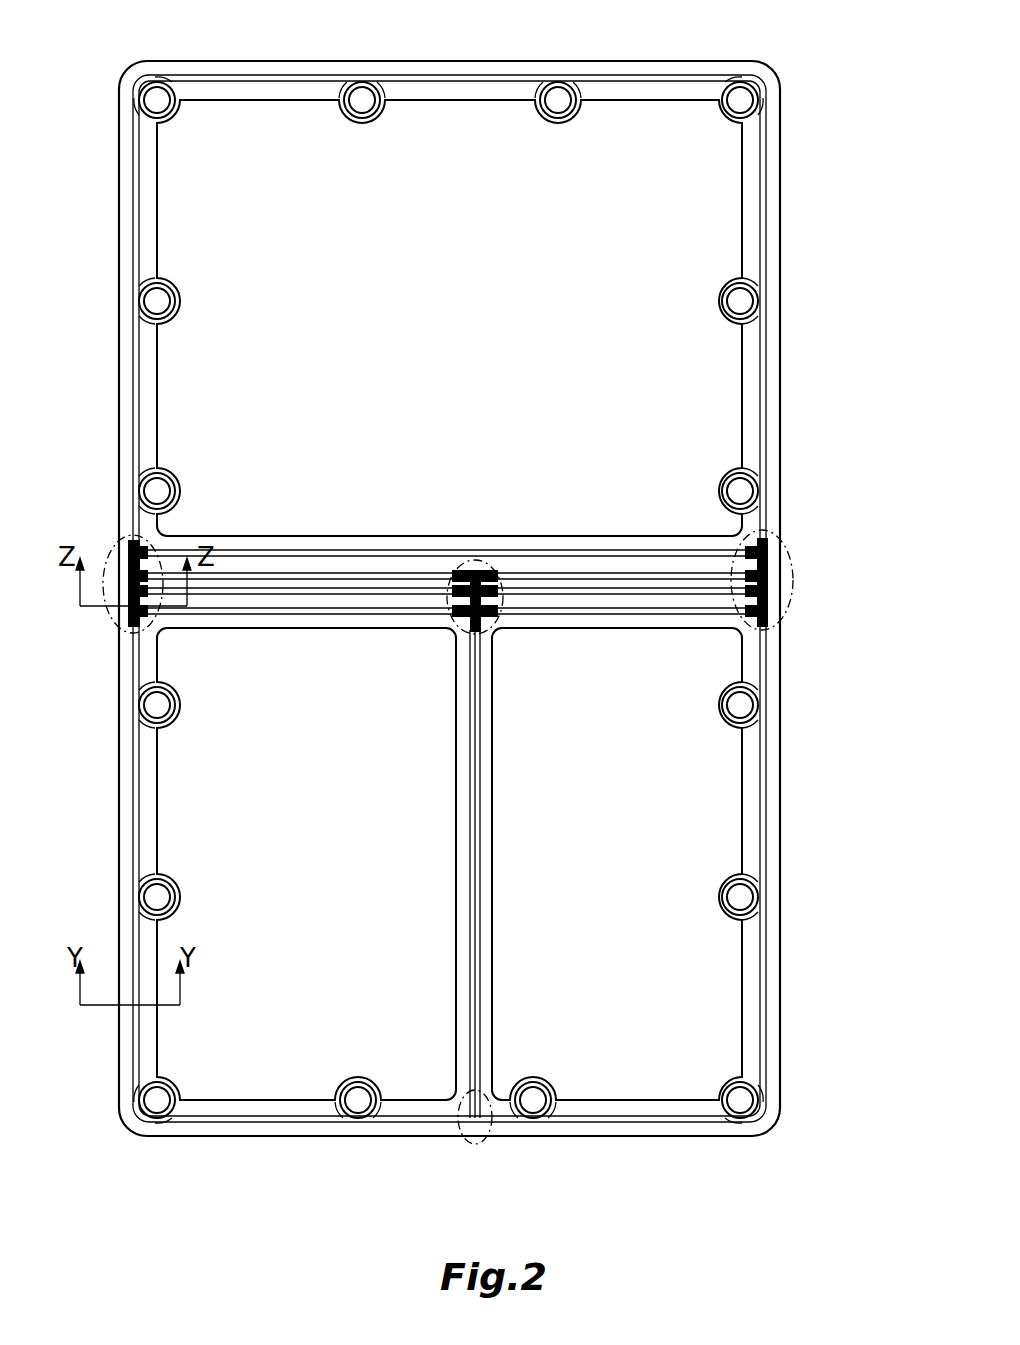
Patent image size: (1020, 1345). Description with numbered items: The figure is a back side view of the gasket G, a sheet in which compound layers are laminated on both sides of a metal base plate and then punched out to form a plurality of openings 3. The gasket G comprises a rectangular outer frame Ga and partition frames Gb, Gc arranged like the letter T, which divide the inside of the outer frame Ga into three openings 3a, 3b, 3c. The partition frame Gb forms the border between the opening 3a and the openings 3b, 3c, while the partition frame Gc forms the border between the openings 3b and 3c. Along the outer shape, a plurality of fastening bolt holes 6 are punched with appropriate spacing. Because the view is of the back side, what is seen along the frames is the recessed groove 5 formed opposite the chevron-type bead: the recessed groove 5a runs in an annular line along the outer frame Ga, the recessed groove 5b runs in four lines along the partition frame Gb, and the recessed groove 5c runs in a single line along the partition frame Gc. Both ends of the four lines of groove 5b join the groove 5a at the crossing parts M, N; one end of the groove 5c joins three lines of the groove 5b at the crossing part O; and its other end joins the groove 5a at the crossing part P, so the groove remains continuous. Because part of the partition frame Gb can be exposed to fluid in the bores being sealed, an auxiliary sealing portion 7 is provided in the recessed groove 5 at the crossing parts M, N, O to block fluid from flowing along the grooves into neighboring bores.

The gasket G is at (603, 58).
The outer frame Ga is at (122, 792).
The partition frame Gb is at (455, 538).
The partition frame Gc is at (490, 920).
The openings 3 is at (513, 646).
The opening 3a is at (715, 412).
The opening 3b is at (712, 822).
The opening 3c is at (258, 1075).
The recessed groove 5 is at (449, 567).
The recessed groove 5a is at (285, 80).
The recessed groove 5b is at (346, 594).
The recessed groove 5c is at (480, 850).
The fastening bolt holes 6 is at (150, 300).
The auxiliary sealing portion 7 is at (775, 586).
The crossing part M is at (114, 552).
The crossing part N is at (785, 555).
The crossing part O is at (498, 628).
The crossing part P is at (462, 1140).